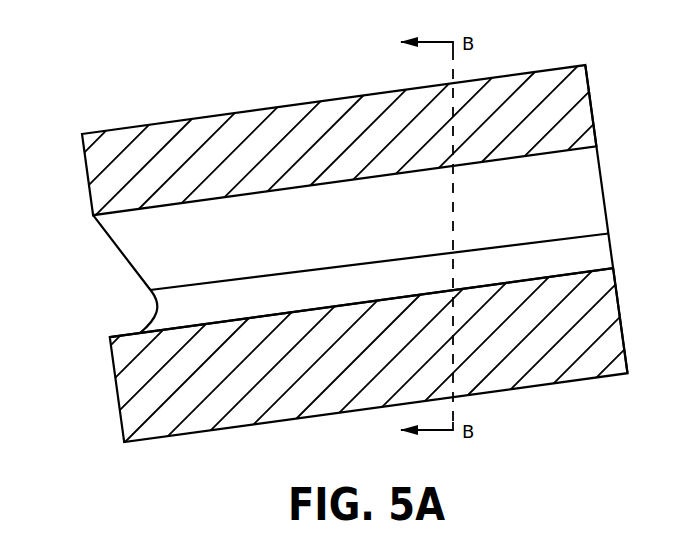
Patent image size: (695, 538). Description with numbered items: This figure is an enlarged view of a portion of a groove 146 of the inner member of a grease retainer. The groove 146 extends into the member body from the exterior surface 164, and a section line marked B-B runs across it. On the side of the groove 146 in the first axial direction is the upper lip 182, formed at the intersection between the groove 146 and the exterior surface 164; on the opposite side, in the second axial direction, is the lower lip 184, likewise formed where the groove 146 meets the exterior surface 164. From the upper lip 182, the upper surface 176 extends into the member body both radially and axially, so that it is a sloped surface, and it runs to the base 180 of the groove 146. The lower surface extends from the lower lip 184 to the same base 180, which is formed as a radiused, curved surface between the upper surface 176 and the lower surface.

The groove 146 is at (600, 209).
The exterior surface 164 is at (580, 108).
The upper surface 176 is at (588, 183).
The base 180 is at (172, 311).
The upper lip 182 is at (110, 219).
The lower lip 184 is at (116, 337).